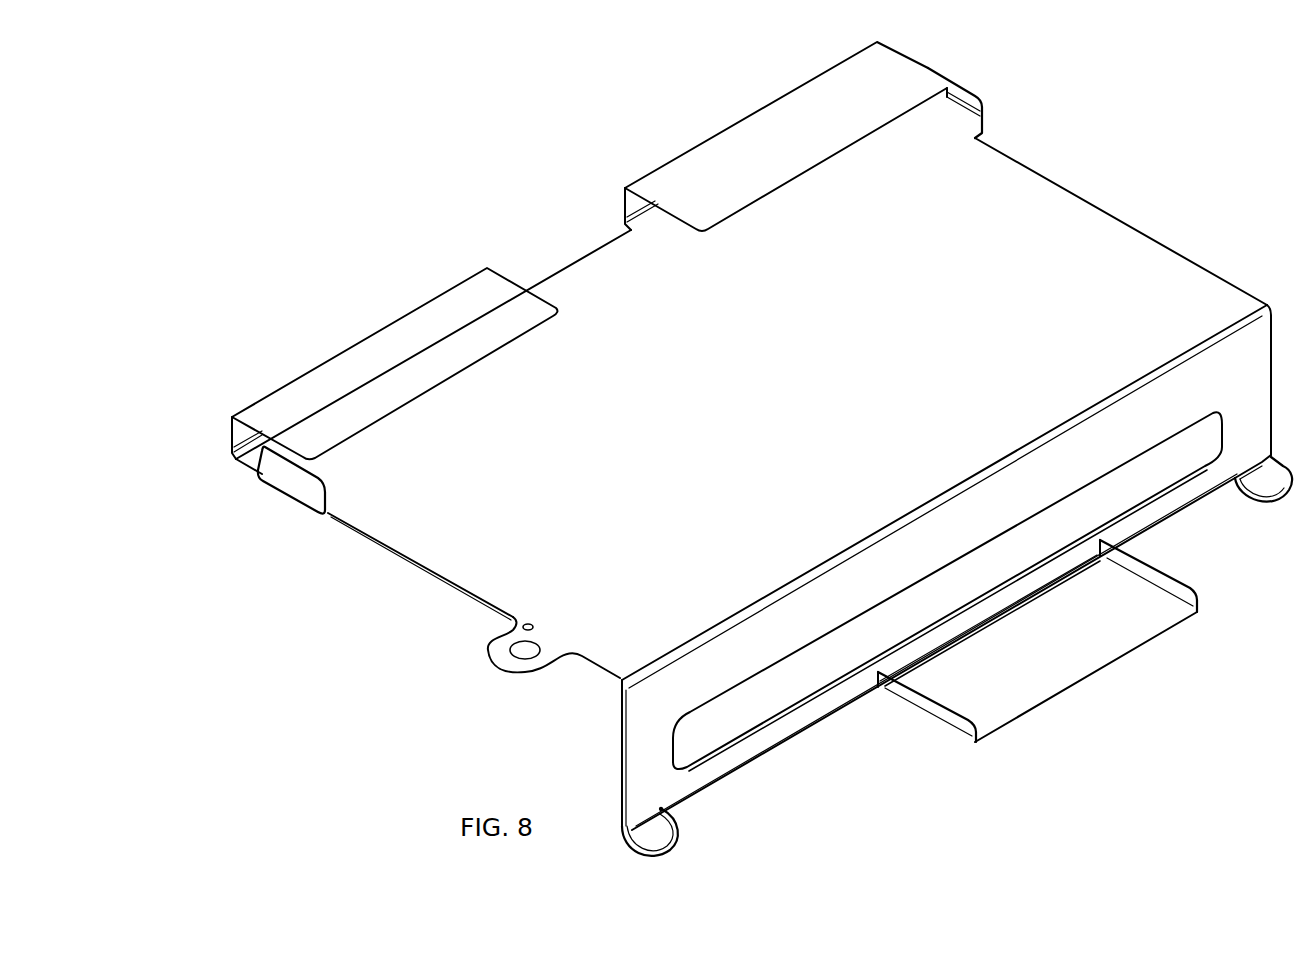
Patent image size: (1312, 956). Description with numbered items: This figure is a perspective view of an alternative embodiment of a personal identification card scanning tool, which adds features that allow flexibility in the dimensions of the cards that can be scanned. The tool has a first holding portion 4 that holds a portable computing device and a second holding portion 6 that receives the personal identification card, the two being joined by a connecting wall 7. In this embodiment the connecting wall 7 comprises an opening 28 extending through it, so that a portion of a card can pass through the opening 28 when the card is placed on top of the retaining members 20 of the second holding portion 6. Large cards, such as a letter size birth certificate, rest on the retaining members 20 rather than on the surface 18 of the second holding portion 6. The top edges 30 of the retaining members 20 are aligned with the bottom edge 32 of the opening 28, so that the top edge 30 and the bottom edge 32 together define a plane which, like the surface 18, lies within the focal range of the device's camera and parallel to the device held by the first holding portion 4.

The first holding portion 4 is at (478, 566).
The second holding portion 6 is at (1058, 665).
The connecting wall 7 is at (638, 743).
The surface 18 is at (1032, 685).
The retaining member 20 is at (908, 693).
The opening 28 is at (947, 616).
The top edge 30 is at (1058, 665).
The bottom edge 32 is at (730, 745).